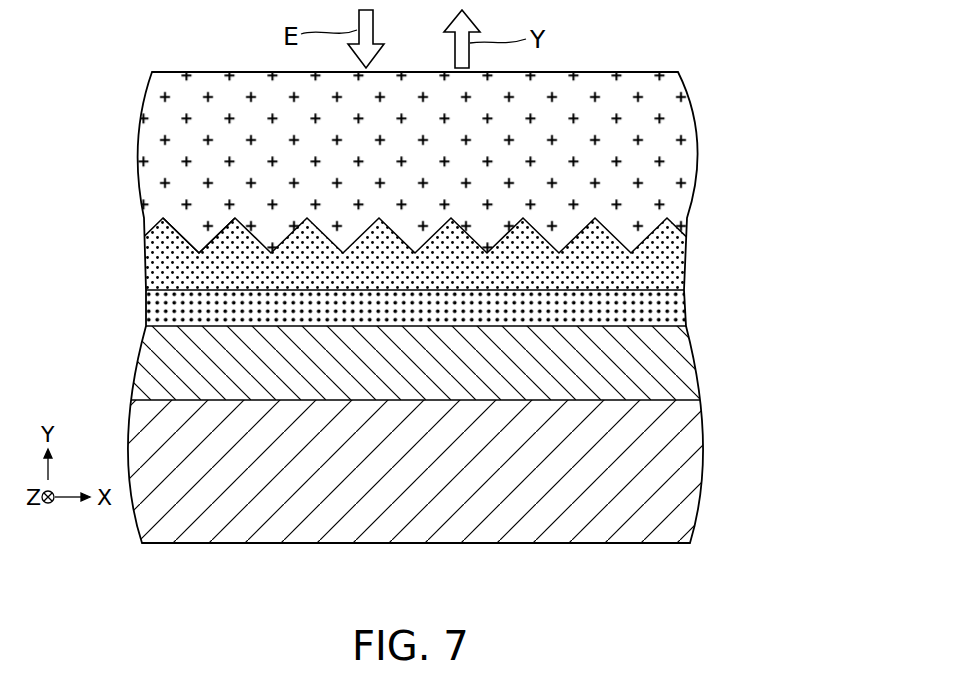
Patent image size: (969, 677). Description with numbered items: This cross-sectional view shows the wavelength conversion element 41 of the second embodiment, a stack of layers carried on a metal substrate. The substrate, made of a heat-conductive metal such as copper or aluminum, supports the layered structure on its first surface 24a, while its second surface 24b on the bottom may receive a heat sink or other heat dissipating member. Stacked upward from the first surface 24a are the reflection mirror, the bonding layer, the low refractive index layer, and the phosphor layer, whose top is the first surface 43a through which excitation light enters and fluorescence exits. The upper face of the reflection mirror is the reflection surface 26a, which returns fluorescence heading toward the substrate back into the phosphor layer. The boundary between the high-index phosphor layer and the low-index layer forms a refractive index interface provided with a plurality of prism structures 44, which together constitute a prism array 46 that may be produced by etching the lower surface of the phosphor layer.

The wavelength conversion element 41 is at (160, 44).
The first surface 43a is at (614, 72).
The reflection surface 26a is at (212, 319).
The first surface 24a is at (151, 393).
The second surface 24b is at (166, 544).
The prism structures 44 is at (369, 250).
The prism array 46 is at (369, 250).